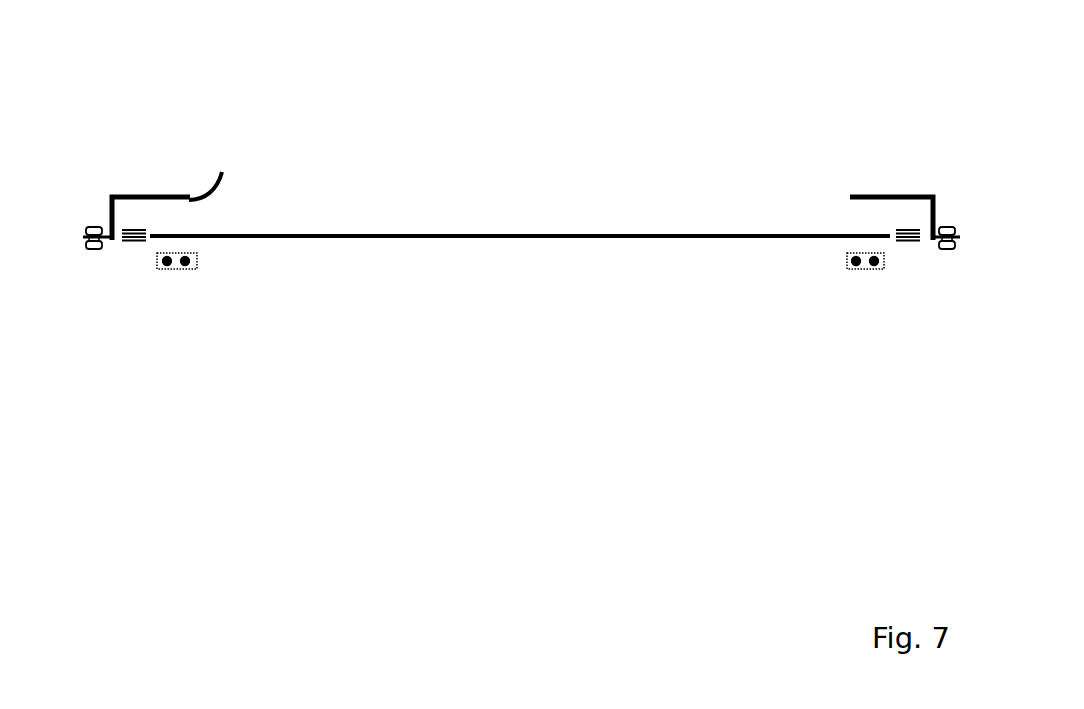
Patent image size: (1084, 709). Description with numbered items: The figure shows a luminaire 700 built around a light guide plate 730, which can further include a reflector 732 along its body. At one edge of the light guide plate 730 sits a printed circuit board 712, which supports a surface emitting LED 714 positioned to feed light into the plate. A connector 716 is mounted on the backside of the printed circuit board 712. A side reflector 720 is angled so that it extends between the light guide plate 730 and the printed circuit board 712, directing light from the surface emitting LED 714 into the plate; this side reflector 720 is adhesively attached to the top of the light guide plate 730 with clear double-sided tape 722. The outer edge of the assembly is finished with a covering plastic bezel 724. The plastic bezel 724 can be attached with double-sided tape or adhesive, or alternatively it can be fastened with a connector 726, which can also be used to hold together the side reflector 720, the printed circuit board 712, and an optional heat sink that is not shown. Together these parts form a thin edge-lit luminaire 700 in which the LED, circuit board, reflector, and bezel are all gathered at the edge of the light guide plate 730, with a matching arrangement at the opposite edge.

The luminaire 700 is at (243, 113).
The printed circuit board 712 is at (212, 257).
The surface emitting LED 714 is at (128, 261).
The connector 716 is at (174, 281).
The side reflector 720 is at (130, 207).
The clear double-sided tape 722 is at (220, 172).
The covering plastic bezel 724 is at (93, 210).
The connector 726 is at (88, 270).
The light guide plate 730 is at (543, 226).
The reflector 732 is at (622, 250).